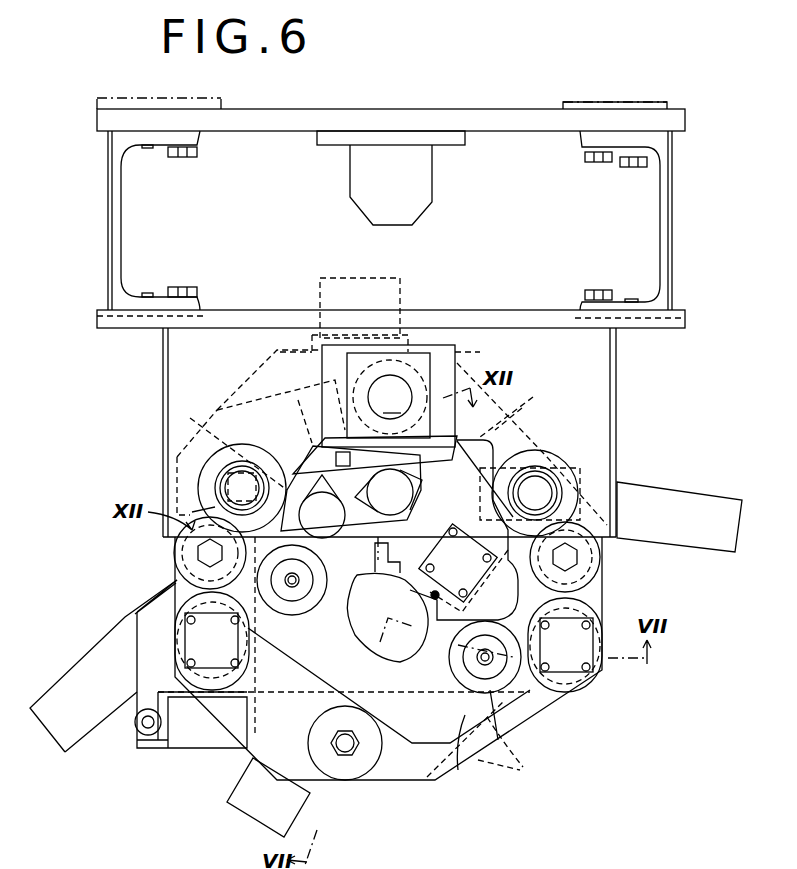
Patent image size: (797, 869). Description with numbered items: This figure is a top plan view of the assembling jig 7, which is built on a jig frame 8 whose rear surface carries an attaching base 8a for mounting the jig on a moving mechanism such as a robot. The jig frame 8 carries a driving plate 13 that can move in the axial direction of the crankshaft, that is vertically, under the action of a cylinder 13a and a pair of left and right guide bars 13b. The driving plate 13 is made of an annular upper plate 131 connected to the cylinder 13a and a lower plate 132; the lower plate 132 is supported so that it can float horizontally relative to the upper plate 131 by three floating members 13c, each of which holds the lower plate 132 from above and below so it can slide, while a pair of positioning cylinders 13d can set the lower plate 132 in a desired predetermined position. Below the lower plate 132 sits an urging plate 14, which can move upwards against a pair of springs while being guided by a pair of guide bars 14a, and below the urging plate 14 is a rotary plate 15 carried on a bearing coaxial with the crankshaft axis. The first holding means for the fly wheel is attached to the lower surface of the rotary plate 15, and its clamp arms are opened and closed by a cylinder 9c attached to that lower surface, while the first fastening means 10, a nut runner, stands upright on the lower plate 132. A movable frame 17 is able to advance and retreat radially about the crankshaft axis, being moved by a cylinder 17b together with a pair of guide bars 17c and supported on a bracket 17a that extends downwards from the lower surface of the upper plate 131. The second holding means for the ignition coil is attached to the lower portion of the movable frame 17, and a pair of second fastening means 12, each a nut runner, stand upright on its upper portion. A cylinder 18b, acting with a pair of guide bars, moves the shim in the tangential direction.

The assembling jig 7 is at (622, 428).
The jig frame 8 is at (518, 318).
The attaching base 8a is at (497, 120).
The cylinder 9c is at (248, 812).
The first fastening means 10 is at (357, 656).
The second fastening means 12 is at (420, 568).
The driving plate 13 is at (553, 715).
The cylinder 13a is at (418, 388).
The guide bars 13b is at (217, 484).
The floating members 13c is at (177, 552).
The positioning cylinders 13d is at (193, 638).
The upper plate 131 is at (522, 408).
The lower plate 132 is at (498, 740).
The urging plate 14 is at (148, 733).
The guide bars 14a is at (287, 587).
The rotary plate 15 is at (203, 742).
The movable frame 17 is at (380, 503).
The bracket 17a is at (243, 387).
The cylinder 17b is at (270, 355).
The guide bars 17c is at (190, 418).
The cylinder 18b is at (92, 733).